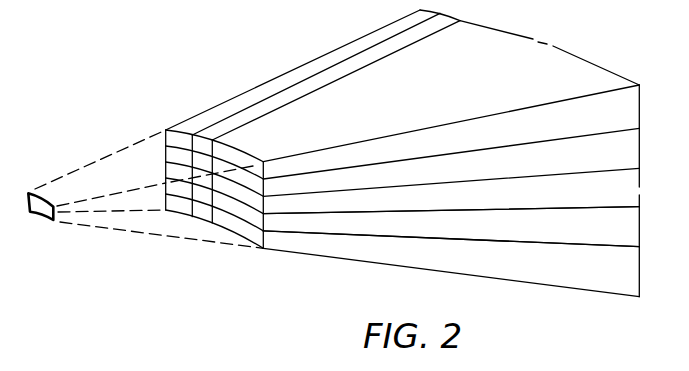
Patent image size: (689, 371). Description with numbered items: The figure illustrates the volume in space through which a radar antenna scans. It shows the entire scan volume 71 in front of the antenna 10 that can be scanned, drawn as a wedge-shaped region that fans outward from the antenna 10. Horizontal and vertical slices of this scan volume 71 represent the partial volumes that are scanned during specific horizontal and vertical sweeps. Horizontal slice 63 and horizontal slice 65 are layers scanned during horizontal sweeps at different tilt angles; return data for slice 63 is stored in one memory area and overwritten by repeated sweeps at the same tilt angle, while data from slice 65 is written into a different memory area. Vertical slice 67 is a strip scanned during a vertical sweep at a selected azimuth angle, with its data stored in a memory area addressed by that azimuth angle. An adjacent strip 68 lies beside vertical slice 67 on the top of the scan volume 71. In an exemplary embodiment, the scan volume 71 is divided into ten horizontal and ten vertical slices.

The antenna 10 is at (43, 212).
The horizontal slice 63 is at (362, 248).
The horizontal slice 65 is at (423, 223).
The vertical slice 67 is at (275, 88).
The upper boundary strip 68 is at (345, 65).
The scan volume 71 is at (575, 44).